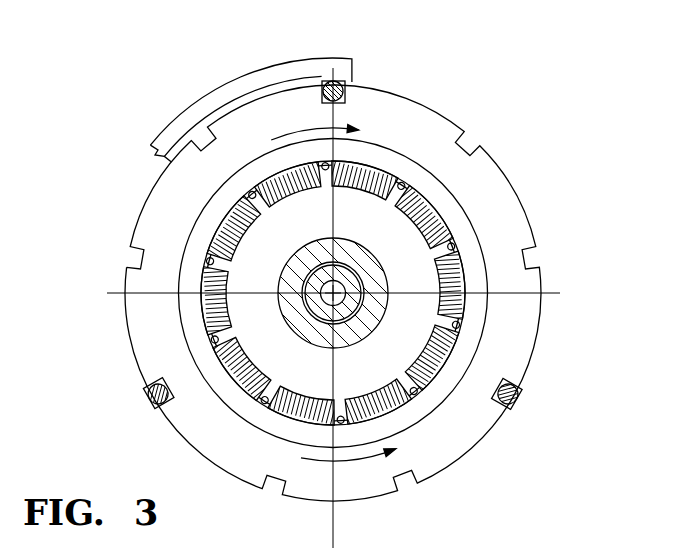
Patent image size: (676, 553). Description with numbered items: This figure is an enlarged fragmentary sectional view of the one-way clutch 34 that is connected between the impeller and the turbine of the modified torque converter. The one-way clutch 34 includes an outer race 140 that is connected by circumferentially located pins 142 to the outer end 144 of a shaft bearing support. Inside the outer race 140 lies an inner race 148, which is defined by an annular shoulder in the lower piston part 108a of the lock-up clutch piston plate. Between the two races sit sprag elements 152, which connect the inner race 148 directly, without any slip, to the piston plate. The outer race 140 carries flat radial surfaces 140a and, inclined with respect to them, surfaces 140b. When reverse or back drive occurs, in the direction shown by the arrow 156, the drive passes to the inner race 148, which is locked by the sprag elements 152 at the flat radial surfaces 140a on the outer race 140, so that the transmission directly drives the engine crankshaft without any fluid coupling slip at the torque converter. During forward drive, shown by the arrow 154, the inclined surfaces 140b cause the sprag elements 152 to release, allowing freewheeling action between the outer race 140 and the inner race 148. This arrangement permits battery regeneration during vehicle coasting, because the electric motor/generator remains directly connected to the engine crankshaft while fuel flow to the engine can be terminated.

The one-way clutch 34 is at (520, 183).
The lower piston part 108a is at (412, 287).
The outer race 140 is at (428, 142).
The flat radial surfaces 140a is at (342, 165).
The inclined surfaces 140b is at (404, 184).
The pins 142 is at (336, 84).
The outer end of shaft bearing support 144 is at (257, 81).
The inner race 148 is at (464, 213).
The sprag elements 152 is at (280, 187).
The forward drive arrow 154 is at (352, 462).
The reverse drive arrow 156 is at (305, 130).